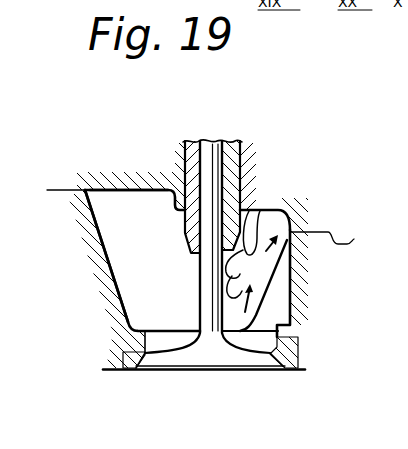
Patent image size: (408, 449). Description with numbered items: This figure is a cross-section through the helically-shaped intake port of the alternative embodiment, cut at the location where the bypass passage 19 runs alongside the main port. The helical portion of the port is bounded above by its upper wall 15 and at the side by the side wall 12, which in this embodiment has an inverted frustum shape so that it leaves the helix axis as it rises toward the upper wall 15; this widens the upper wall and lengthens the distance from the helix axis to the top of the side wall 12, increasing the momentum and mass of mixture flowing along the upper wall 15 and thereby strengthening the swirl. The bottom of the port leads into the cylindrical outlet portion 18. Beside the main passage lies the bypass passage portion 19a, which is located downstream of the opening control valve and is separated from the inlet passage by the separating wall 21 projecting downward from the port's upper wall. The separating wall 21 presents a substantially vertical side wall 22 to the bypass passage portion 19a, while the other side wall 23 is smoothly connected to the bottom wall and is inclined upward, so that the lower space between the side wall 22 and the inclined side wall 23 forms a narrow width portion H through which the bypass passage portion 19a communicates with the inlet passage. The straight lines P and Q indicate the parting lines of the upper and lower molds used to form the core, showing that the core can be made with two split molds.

The parting line P is at (57, 190).
The upper wall of the helical portion 15 is at (143, 189).
The side wall of the helical portion 12 is at (106, 253).
The side wall of the separating wall 22 is at (244, 167).
The separating wall 21 is at (215, 338).
The cylindrical outlet portion 18 is at (275, 365).
The narrow width portion H is at (252, 360).
The bypass passage 19 is at (288, 217).
The parting line Q is at (330, 240).
The bypass passage portion 19a is at (266, 215).
The side wall of the bypass passage portion 23 is at (268, 264).